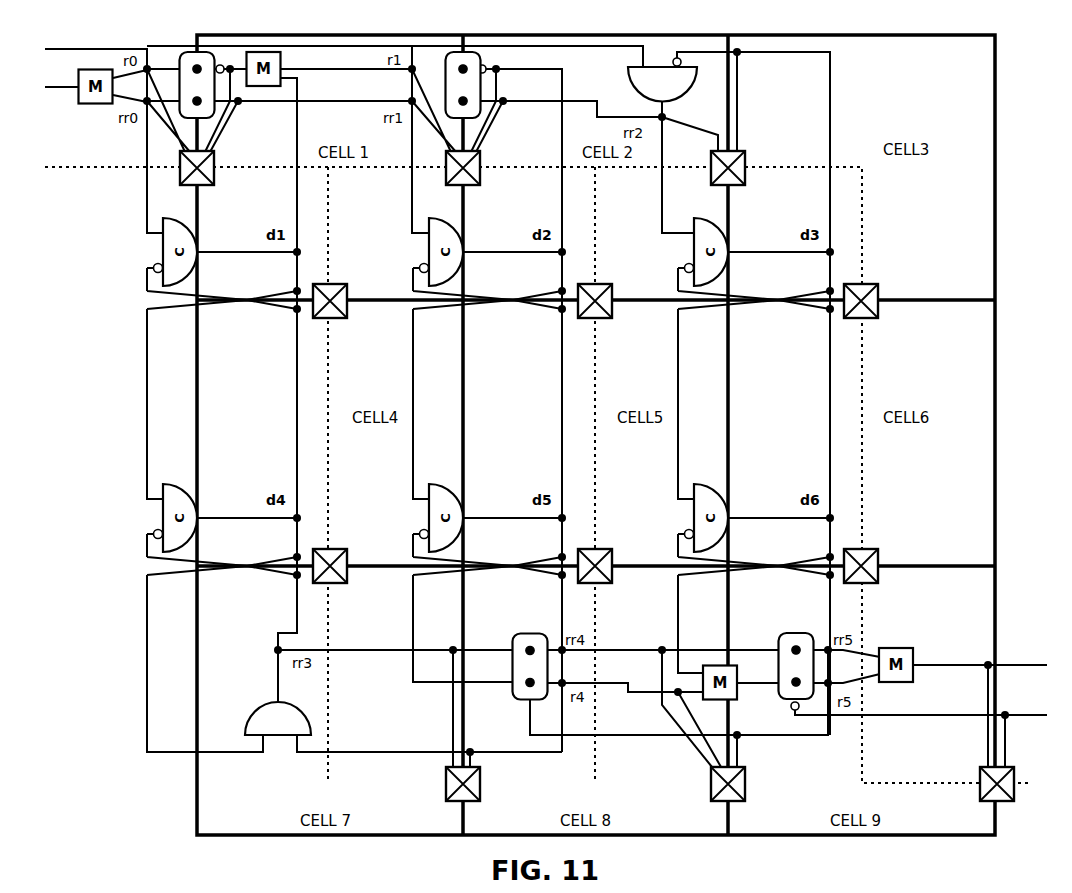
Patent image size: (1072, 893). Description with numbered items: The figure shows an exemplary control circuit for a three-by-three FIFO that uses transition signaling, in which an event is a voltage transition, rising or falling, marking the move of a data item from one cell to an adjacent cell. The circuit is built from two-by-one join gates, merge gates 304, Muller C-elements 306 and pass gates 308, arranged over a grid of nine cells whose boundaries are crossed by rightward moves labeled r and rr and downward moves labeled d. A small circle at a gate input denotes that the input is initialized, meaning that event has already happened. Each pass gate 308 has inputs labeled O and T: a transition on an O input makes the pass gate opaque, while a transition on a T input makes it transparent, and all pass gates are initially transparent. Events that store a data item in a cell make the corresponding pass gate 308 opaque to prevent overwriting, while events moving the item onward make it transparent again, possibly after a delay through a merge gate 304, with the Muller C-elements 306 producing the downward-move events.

The merge gate 304 is at (514, 380).
The Muller C-element 306 is at (424, 409).
The pass gate 308 is at (739, 798).